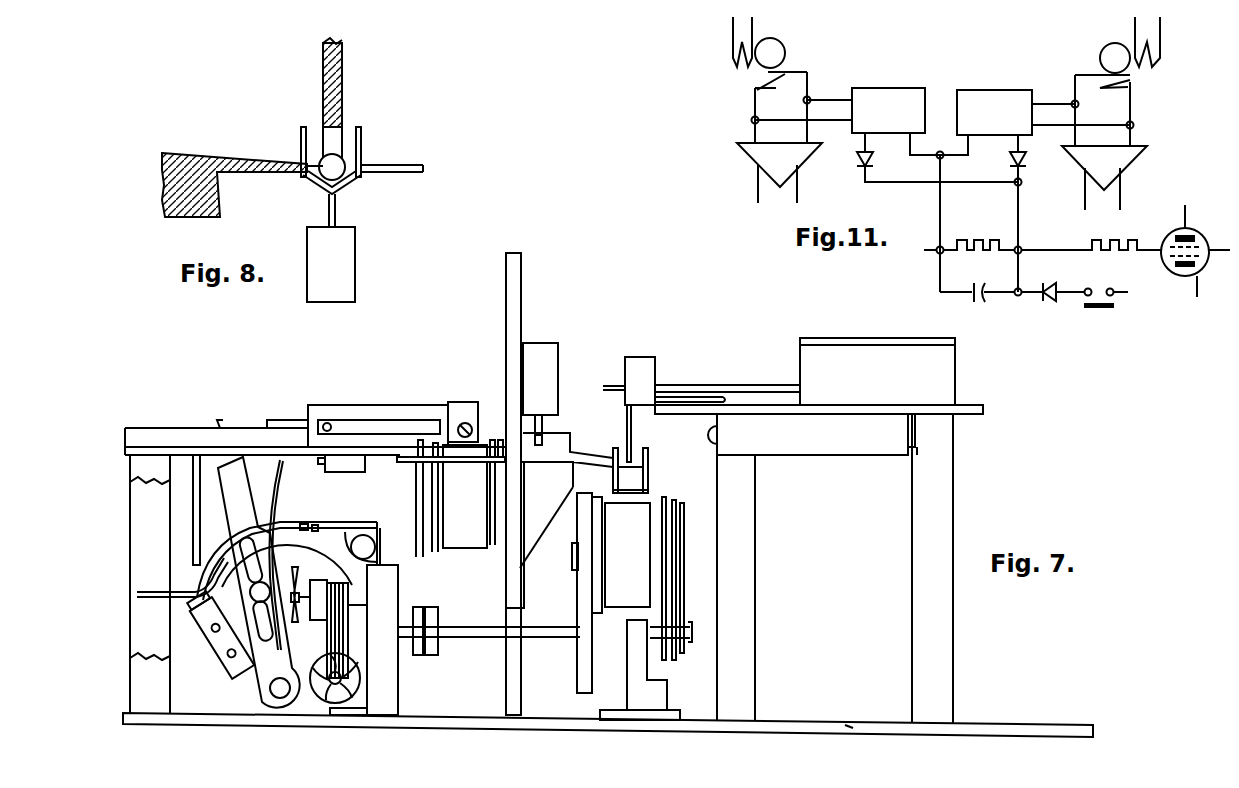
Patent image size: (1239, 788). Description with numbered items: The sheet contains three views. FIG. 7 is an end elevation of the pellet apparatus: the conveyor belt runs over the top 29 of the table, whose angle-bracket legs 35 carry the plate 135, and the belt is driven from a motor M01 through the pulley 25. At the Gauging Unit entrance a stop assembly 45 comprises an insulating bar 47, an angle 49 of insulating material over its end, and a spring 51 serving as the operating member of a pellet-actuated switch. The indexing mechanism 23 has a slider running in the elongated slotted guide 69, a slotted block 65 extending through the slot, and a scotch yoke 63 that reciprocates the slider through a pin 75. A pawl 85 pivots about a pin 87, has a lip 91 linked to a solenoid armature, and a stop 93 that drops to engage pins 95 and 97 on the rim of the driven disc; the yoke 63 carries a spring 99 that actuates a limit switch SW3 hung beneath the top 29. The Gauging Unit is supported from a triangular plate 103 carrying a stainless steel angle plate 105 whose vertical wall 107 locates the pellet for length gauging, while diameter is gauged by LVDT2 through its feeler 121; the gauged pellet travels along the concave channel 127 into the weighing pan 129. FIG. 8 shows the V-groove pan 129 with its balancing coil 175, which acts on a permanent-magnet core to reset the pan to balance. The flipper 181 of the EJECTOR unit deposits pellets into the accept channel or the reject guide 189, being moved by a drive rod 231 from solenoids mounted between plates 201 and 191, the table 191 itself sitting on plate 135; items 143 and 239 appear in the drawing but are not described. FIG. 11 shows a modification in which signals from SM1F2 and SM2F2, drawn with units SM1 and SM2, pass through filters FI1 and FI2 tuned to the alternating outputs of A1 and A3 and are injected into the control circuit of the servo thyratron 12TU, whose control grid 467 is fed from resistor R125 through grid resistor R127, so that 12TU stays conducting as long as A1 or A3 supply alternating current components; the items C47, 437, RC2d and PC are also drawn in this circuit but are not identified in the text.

In FIG. 8, the flipper 181 is at (343, 66).
In FIG. 7, the flipper 181 is at (626, 418).
In FIG. 8, the guide 189 is at (362, 137).
In FIG. 7, the guide 189 is at (649, 462).
In FIG. 8, the plate 143 is at (413, 163).
In FIG. 8, the weighing pan 129 is at (345, 186).
In FIG. 8, the balancing coil 175 is at (356, 250).
In FIG. 11, the sensing microphone 1 SM1 is at (781, 45).
In FIG. 11, the SM1F2 relay element SM1F2 is at (758, 80).
In FIG. 11, the A1 output stage A1 is at (779, 173).
In FIG. 11, the filter FI1 is at (892, 86).
In FIG. 11, the filter FI2 is at (1000, 88).
In FIG. 11, the sensing microphone 2 SM2 is at (1103, 49).
In FIG. 11, the SM2F2 relay element SM2F2 is at (1133, 86).
In FIG. 11, the A3 output stage A3 is at (1104, 178).
In FIG. 11, the terminal PC is at (916, 252).
In FIG. 11, the resistor R125 is at (979, 235).
In FIG. 11, the grid resistor R127 is at (1112, 244).
In FIG. 11, the servo thyratron 12TU is at (1185, 251).
In FIG. 11, the control grid 467 is at (1173, 272).
In FIG. 11, the capacitor C47 is at (982, 306).
In FIG. 11, the diode 437 is at (1060, 275).
In FIG. 11, the relay contact RC2d is at (1100, 313).
In FIG. 7, the indexing mechanism 23 is at (291, 755).
In FIG. 7, the plate 135 is at (848, 730).
In FIG. 7, the elongated slotted guide 69 is at (178, 425).
In FIG. 7, the table top 29 is at (125, 451).
In FIG. 7, the pin 75 is at (222, 426).
In FIG. 7, the slotted block 65 is at (288, 420).
In FIG. 7, the bar 47 is at (378, 405).
In FIG. 7, the spring 51 is at (403, 425).
In FIG. 7, the stop assembly 45 is at (473, 376).
In FIG. 7, the angle 49 is at (473, 408).
In FIG. 7, the pulley 25 is at (490, 546).
In FIG. 7, the angle-bracket legs 35 is at (506, 673).
In FIG. 7, the diameter transducer LVDT2 is at (538, 350).
In FIG. 7, the diameter feeler 121 is at (542, 418).
In FIG. 7, the angle plate 105 is at (564, 437).
In FIG. 7, the channel 127 is at (593, 466).
In FIG. 7, the vertical wall 107 is at (553, 461).
In FIG. 7, the triangular plate 103 is at (550, 548).
In FIG. 7, the motor M01 is at (620, 576).
In FIG. 7, the Ejector Unit EJECTOR is at (680, 365).
In FIG. 7, the drive rod 231 is at (727, 389).
In FIG. 7, the plate 201 is at (872, 338).
In FIG. 7, the table 191 is at (985, 411).
In FIG. 7, the stem 239 is at (632, 446).
In FIG. 7, the scotch yoke 63 is at (266, 676).
In FIG. 7, the spring 99 is at (282, 485).
In FIG. 7, the pawl 85 is at (215, 557).
In FIG. 7, the pin 97 is at (306, 514).
In FIG. 7, the stop 93 is at (313, 531).
In FIG. 7, the pivot pin 87 is at (376, 547).
In FIG. 7, the lip 91 is at (137, 594).
In FIG. 7, the pin 95 is at (224, 652).
In FIG. 7, the limit switch SW3 is at (345, 466).